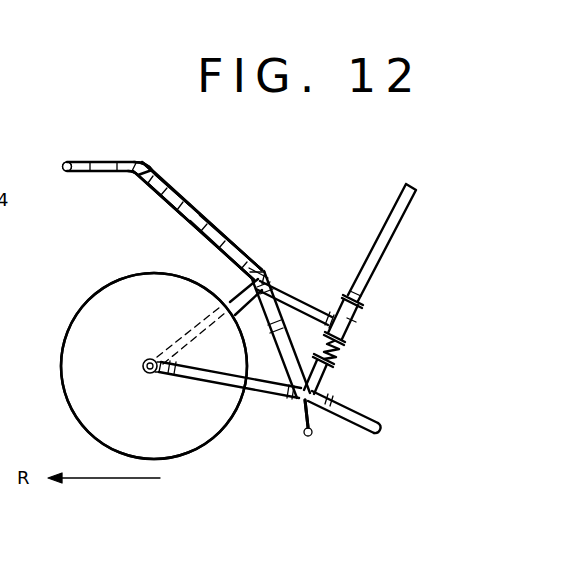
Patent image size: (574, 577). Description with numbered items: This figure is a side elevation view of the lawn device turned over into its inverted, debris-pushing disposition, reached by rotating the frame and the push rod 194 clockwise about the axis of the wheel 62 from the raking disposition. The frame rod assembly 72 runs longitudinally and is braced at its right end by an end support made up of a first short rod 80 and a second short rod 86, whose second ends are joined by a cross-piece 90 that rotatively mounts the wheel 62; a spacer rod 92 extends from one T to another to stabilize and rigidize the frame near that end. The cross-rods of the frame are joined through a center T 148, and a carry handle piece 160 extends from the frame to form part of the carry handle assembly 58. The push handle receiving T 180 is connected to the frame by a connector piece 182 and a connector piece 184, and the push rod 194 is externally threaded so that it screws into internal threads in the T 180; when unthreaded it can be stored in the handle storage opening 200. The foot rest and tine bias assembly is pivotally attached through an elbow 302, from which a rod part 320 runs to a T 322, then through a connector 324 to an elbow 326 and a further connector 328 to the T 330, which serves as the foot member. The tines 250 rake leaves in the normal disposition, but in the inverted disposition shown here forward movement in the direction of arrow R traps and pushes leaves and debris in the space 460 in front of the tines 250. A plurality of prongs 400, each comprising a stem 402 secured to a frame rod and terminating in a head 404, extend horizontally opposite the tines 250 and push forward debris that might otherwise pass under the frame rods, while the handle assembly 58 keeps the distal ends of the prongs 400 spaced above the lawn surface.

The handle assembly 58 is at (381, 427).
The wheel 62 is at (80, 382).
The frame rod assembly 72 is at (257, 269).
The first short rod 80 is at (263, 396).
The second short rod 86 is at (237, 290).
The cross-piece 90 is at (148, 372).
The spacer rod 92 is at (268, 322).
The center T 148 is at (320, 382).
The carry handle piece 160 is at (221, 240).
The push handle receiving T 180 is at (353, 326).
The connector piece 182 is at (337, 355).
The connector piece 184 is at (286, 296).
The push rod 194 is at (392, 217).
The handle storage opening 200 is at (322, 344).
The tines 250 is at (158, 193).
The elbow 302 is at (252, 272).
The rod part 320 is at (203, 219).
The T 322 is at (177, 211).
The connector 324 is at (170, 182).
The elbow 326 is at (137, 161).
The connector 328 is at (100, 162).
The T 330 is at (62, 172).
The prongs 400 is at (303, 427).
The stem 402 is at (311, 411).
The head 404 is at (318, 455).
The space 460 is at (80, 286).